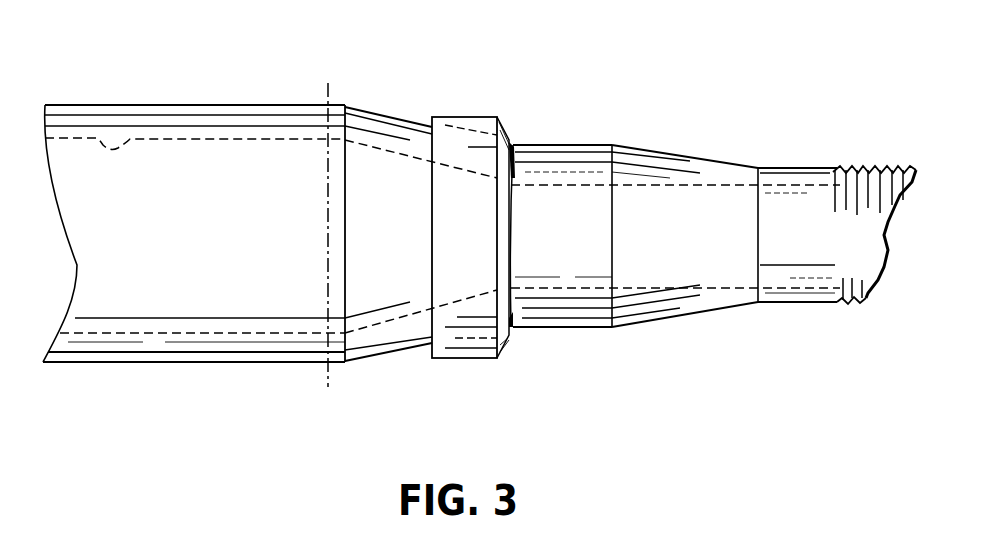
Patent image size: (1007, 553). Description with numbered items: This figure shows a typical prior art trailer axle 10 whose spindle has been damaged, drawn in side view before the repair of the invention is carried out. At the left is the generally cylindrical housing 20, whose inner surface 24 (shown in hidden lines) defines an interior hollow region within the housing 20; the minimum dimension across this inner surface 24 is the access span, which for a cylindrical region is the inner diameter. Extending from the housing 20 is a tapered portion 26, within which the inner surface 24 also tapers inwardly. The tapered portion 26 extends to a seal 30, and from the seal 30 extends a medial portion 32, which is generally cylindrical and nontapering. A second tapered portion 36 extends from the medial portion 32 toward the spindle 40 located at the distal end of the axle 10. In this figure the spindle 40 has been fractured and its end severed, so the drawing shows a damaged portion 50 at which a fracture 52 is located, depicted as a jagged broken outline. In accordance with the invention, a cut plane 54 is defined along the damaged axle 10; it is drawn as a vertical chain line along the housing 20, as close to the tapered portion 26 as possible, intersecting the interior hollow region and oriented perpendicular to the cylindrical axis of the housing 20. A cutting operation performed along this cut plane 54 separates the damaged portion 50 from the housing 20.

The trailer axle 10 is at (644, 93).
The housing 20 is at (322, 66).
The inner surface 24 is at (135, 142).
The tapered portion 26 is at (400, 132).
The seal 30 is at (482, 120).
The medial portion 32 is at (585, 157).
The second tapered portion 36 is at (713, 167).
The spindle 40 is at (818, 173).
The damaged portion 50 is at (913, 151).
The fracture 52 is at (882, 278).
The cut plane 54 is at (328, 368).